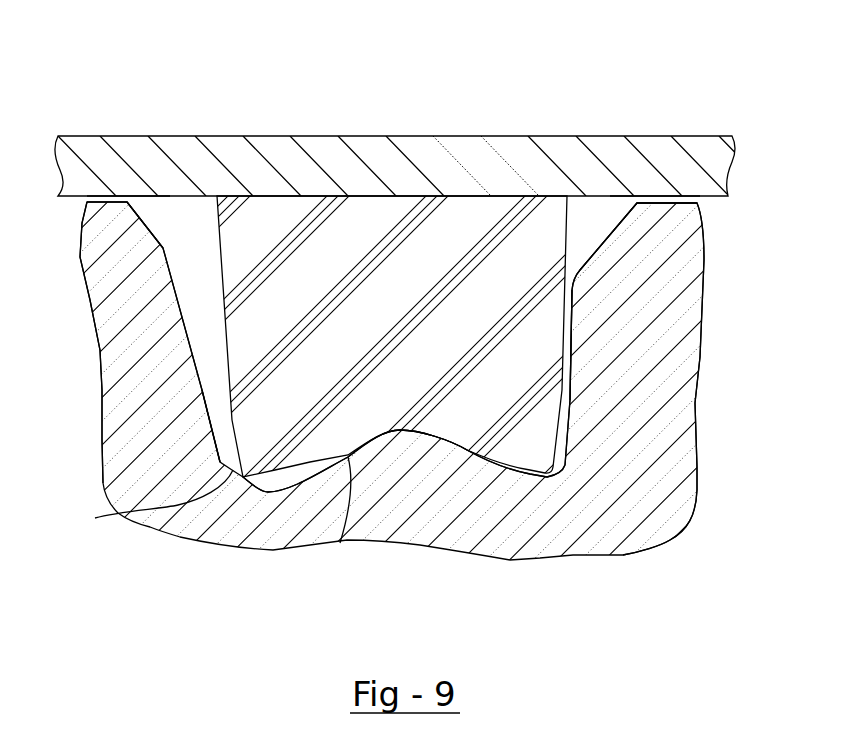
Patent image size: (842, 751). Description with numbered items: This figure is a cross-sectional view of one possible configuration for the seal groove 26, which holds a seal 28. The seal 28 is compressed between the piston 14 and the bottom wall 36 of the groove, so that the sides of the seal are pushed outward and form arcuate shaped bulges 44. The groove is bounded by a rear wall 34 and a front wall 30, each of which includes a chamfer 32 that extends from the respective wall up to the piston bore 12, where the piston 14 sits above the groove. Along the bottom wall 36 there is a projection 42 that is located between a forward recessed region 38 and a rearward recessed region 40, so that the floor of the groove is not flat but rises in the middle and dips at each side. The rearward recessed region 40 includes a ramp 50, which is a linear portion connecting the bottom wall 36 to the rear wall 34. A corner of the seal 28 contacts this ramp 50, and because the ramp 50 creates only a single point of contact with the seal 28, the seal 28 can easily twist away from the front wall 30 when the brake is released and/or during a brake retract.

The seal groove 26 is at (394, 80).
The piston 14 is at (498, 148).
The piston bore 12 is at (118, 200).
The chamfers 32 is at (137, 218).
The front wall 30 is at (573, 322).
The arcuate shaped bulges 44 is at (190, 347).
The rear wall 34 is at (197, 388).
The ramp 50 is at (95, 518).
The rearward recessed region 40 is at (281, 515).
The bottom wall 36 is at (340, 543).
The projection 42 is at (407, 460).
The forward recessed region 38 is at (563, 507).
The seal 28 is at (360, 341).